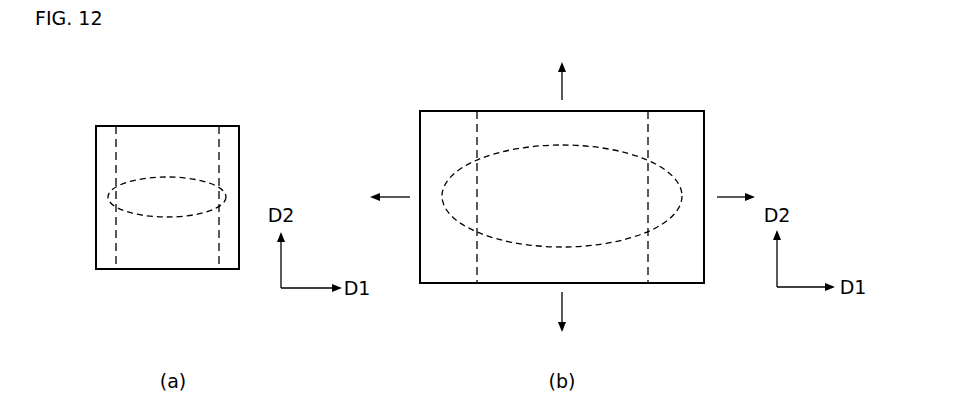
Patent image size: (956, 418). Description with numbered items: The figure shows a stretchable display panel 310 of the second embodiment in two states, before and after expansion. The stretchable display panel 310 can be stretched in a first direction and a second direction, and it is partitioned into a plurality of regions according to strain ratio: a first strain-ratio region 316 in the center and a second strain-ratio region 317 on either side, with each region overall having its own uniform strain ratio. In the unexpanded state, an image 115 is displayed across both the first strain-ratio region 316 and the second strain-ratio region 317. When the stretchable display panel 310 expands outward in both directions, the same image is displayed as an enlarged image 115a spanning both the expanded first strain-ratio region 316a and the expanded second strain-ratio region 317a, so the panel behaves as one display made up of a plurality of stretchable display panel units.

The stretchable display panel 310 is at (166, 126).
The second strain-ratio region 317 is at (231, 155).
The first strain-ratio region 316 is at (165, 269).
The image 115 is at (127, 183).
The second strain-ratio region (expanded) 317a is at (428, 148).
The first strain-ratio region (expanded) 316a is at (624, 118).
The expanded image 115a is at (612, 243).